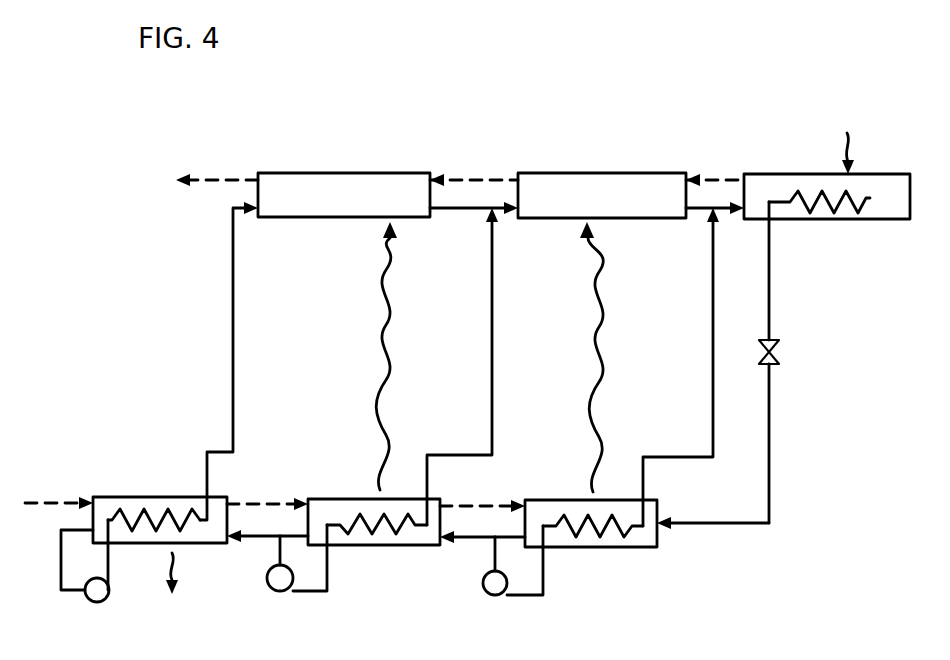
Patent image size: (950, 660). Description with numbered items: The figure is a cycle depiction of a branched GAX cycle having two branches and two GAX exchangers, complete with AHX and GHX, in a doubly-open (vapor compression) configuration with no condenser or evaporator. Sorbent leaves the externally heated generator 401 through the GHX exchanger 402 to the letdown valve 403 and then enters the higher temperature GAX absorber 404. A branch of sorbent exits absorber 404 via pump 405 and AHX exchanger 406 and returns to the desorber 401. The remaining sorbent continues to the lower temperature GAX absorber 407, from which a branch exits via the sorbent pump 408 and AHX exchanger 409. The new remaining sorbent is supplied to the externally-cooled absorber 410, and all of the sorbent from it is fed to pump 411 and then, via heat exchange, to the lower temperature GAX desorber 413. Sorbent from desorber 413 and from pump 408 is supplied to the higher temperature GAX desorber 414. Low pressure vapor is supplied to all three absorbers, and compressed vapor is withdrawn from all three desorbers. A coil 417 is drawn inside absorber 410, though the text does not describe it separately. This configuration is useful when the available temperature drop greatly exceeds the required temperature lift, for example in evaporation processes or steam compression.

The externally heated generator 401 is at (757, 175).
The GHX exchanger 402 is at (855, 145).
The letdown valve 403 is at (783, 343).
The higher temperature GAX absorber 404 is at (540, 500).
The pump 405 is at (485, 594).
The AHX exchanger 406 is at (567, 520).
The lower temperature GAX absorber 407 is at (318, 499).
The sorbent pump 408 is at (273, 592).
The AHX exchanger 409 is at (350, 513).
The externally-cooled absorber 410 is at (100, 497).
The pump 411 is at (92, 603).
The lower temperature GAX desorber 413 is at (322, 173).
The higher temperature GAX desorber 414 is at (582, 173).
The heating coil 417 is at (166, 512).